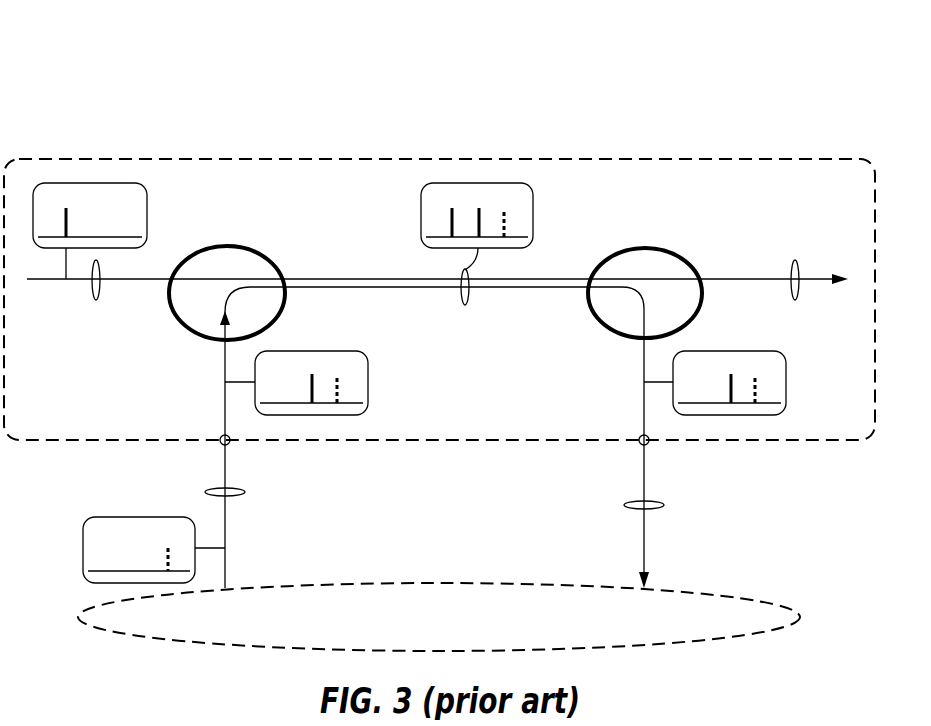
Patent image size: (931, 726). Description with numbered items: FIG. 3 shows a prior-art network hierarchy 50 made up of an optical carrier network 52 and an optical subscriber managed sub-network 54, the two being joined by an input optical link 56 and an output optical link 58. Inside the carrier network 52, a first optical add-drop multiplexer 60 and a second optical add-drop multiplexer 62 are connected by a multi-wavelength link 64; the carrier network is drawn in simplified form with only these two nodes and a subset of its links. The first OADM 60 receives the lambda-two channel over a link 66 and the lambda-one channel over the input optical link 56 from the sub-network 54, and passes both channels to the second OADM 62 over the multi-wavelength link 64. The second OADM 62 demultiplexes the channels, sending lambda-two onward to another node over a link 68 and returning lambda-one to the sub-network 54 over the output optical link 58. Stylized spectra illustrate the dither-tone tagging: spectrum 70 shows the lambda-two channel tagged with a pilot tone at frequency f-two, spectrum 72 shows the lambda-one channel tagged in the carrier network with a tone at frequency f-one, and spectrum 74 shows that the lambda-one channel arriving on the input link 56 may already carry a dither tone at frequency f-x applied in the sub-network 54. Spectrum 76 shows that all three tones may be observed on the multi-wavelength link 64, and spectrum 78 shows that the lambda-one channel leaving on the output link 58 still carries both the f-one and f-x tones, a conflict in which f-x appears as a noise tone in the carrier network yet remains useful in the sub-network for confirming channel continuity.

The network hierarchy 50 is at (52, 96).
The optical carrier network 52 is at (438, 159).
The optical subscriber managed sub-network 54 is at (438, 583).
The input optical link 56 is at (245, 492).
The output optical link 58 is at (664, 505).
The first optical add-drop multiplexer 60 is at (229, 246).
The second optical add-drop multiplexer 62 is at (648, 248).
The multi-wavelength link 64 is at (465, 305).
The link 66 is at (96, 300).
The link 68 is at (795, 300).
The stylized spectrum 70 is at (147, 217).
The stylized spectrum 72 is at (368, 383).
The stylized spectrum 74 is at (140, 517).
The stylized spectrum 76 is at (533, 216).
The stylized spectrum 78 is at (786, 383).